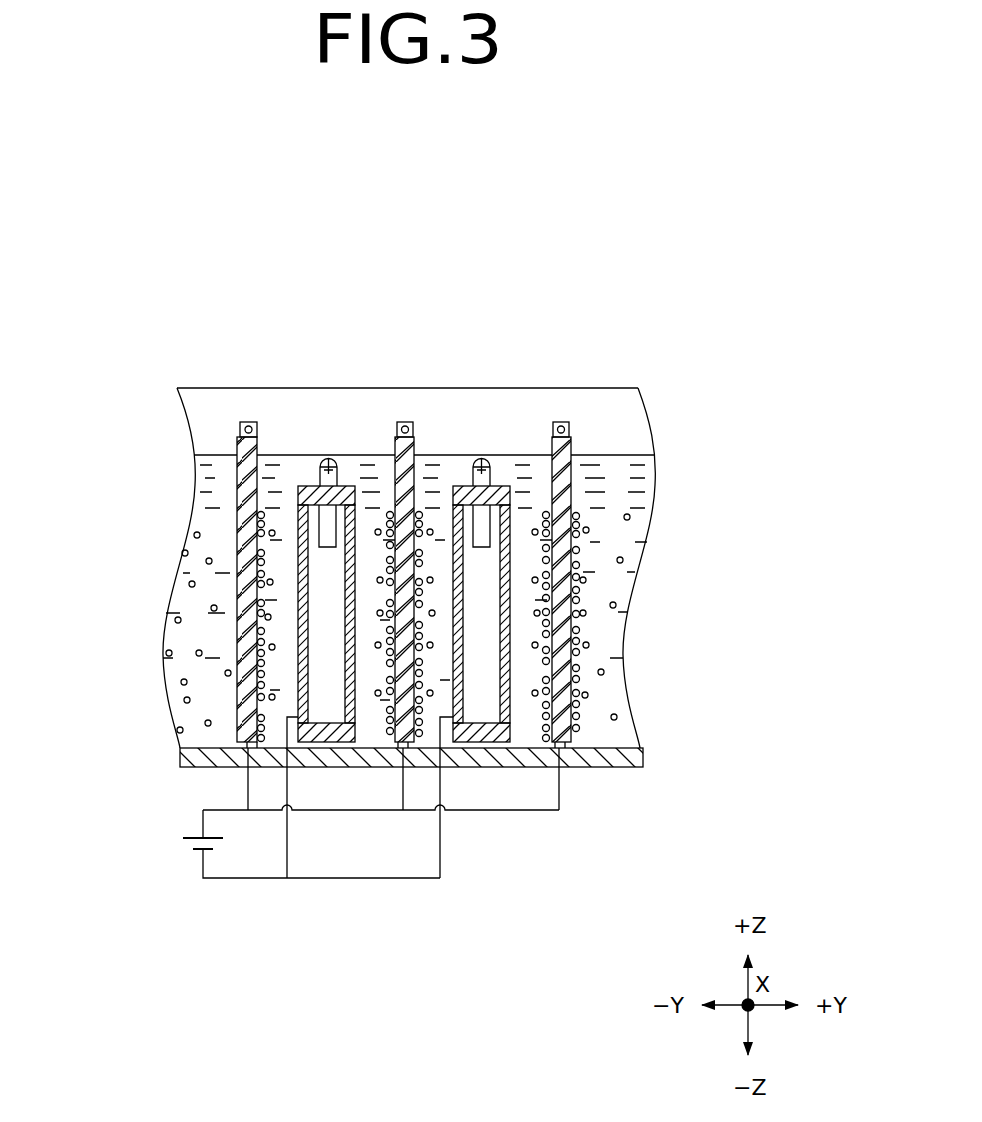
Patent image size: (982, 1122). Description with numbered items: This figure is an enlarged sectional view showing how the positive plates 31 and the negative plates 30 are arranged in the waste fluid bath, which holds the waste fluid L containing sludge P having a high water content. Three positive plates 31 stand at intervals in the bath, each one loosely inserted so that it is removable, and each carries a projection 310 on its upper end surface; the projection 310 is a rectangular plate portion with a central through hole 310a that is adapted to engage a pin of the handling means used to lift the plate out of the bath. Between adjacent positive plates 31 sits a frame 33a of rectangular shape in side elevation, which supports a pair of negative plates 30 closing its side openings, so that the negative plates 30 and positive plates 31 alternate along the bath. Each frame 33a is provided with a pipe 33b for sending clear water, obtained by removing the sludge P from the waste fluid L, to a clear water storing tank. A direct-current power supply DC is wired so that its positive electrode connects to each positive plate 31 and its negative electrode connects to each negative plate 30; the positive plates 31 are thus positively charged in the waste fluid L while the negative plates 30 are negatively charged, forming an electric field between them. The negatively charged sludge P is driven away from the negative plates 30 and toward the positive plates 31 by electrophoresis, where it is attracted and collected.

The positive plate 31 is at (398, 519).
The projection 310 is at (250, 424).
The through hole 310a is at (254, 428).
The negative plate 30 is at (452, 583).
The frame 33a is at (300, 487).
The pipe 33b is at (328, 458).
The sludge P is at (275, 510).
The waste fluid L is at (212, 447).
The direct-current power supply DC is at (188, 838).